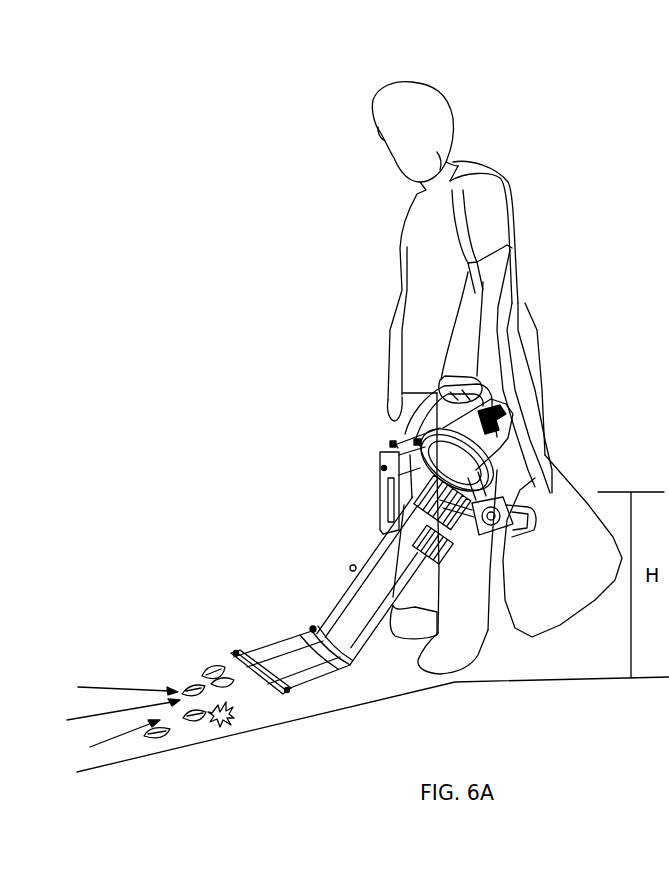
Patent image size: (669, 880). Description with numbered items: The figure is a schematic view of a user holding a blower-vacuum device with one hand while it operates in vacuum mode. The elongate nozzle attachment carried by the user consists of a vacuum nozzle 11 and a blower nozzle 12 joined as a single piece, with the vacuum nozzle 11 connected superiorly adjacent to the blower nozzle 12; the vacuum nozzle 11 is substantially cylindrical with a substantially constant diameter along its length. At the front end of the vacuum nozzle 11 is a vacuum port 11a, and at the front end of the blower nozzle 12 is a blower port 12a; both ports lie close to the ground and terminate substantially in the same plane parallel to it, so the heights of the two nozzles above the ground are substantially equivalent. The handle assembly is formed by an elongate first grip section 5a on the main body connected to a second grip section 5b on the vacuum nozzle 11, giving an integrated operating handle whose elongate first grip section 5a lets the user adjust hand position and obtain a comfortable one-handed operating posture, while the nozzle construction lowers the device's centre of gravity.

The first grip section 5a is at (412, 417).
The second grip section 5b is at (387, 502).
The vacuum nozzle 11 is at (342, 585).
The vacuum port 11a is at (253, 677).
The blower nozzle 12 is at (372, 628).
The blower port 12a is at (333, 665).